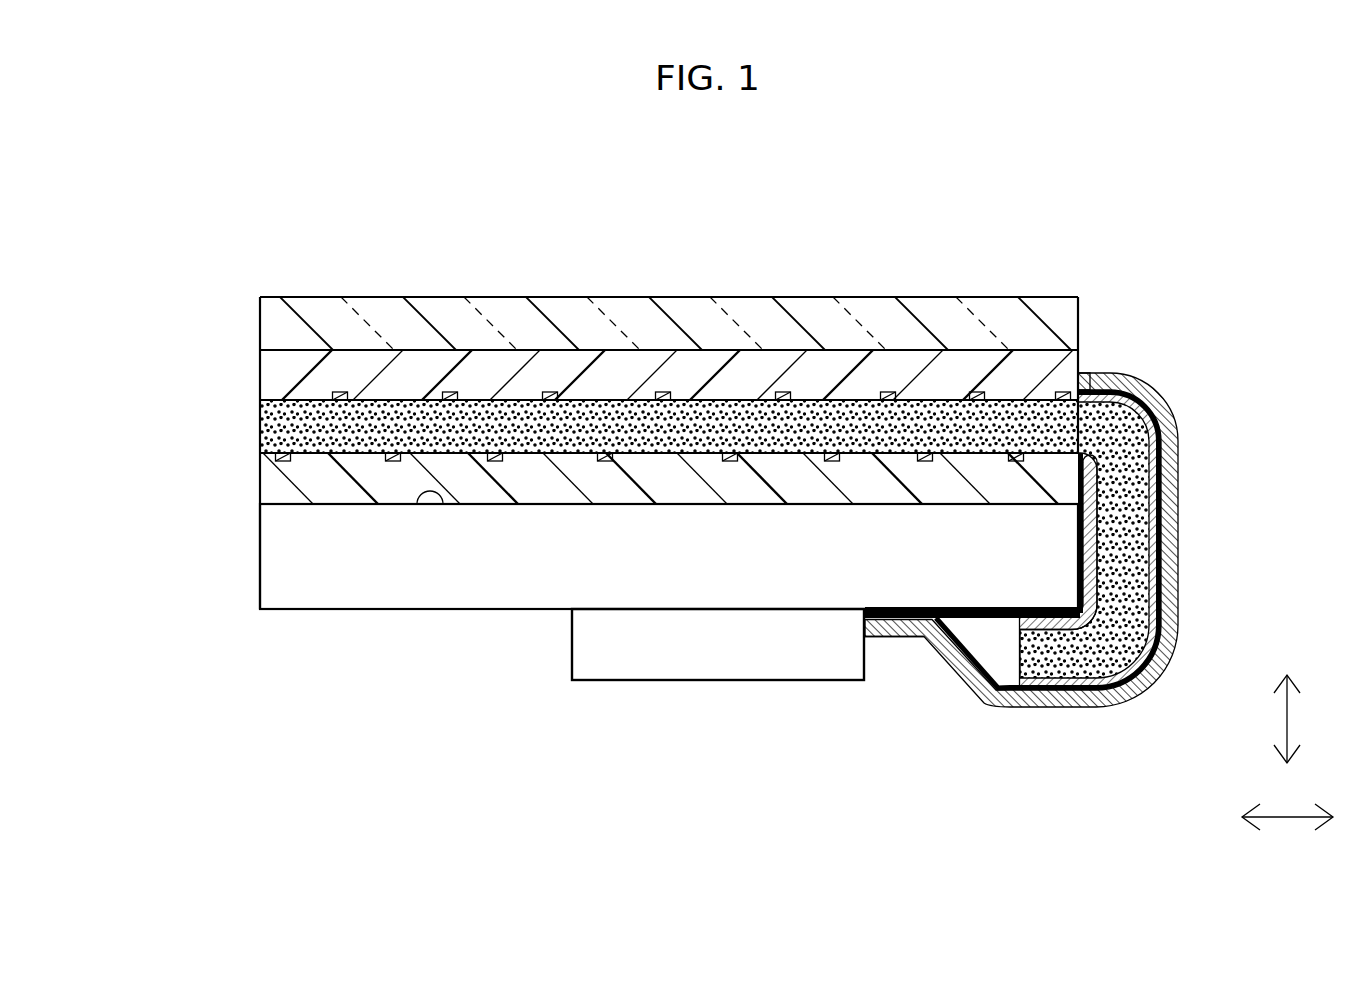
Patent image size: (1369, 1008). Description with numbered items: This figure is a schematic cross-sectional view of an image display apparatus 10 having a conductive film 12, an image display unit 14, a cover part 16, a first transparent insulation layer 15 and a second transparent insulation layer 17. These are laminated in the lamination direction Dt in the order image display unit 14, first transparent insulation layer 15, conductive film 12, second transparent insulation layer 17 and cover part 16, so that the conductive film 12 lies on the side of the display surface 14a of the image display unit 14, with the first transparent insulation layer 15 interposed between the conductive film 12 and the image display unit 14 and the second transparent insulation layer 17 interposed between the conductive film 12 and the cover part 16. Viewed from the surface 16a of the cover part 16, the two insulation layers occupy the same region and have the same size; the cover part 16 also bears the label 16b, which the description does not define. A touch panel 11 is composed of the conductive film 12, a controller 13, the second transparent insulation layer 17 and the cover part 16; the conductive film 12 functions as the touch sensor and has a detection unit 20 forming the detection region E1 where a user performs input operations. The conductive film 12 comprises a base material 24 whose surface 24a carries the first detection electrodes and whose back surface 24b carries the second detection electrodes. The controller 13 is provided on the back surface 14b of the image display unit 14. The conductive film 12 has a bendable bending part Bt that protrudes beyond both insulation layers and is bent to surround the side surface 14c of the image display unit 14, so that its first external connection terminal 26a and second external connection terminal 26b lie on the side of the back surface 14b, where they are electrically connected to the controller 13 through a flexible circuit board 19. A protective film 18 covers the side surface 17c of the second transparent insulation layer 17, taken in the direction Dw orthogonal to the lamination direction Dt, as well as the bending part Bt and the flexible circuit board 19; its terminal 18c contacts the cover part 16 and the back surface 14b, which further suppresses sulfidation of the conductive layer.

The image display apparatus 10 is at (1146, 242).
The touch panel 11 is at (158, 461).
The conductive film 12 is at (275, 426).
The controller 13 is at (717, 681).
The image display unit 14 is at (305, 568).
The display surface 14a is at (417, 504).
The back surface 14b is at (510, 609).
The side surface 14c is at (1085, 553).
The first transparent insulation layer 15 is at (280, 480).
The cover part 16 is at (333, 297).
The surface of cover part 16a is at (460, 297).
The rear surface of cover member 16b is at (800, 348).
The second transparent insulation layer 17 is at (1017, 380).
The side surface of second transparent insulation layer 17c is at (1085, 360).
The protective film 18 is at (1166, 650).
The terminal of protective film 18c is at (900, 638).
The flexible circuit board 19 is at (929, 630).
The detection unit 20 is at (661, 396).
The base material 24 is at (918, 412).
The surface of base material 24a is at (722, 398).
The back surface of base material 24b is at (335, 456).
The first external connection terminal 26a is at (1047, 586).
The second external connection terminal 26b is at (1037, 676).
The detection region E1 is at (600, 378).
The bending part Bt is at (1189, 504).
The lamination direction Dt is at (1304, 719).
The direction orthogonal to lamination direction Dw is at (1287, 836).